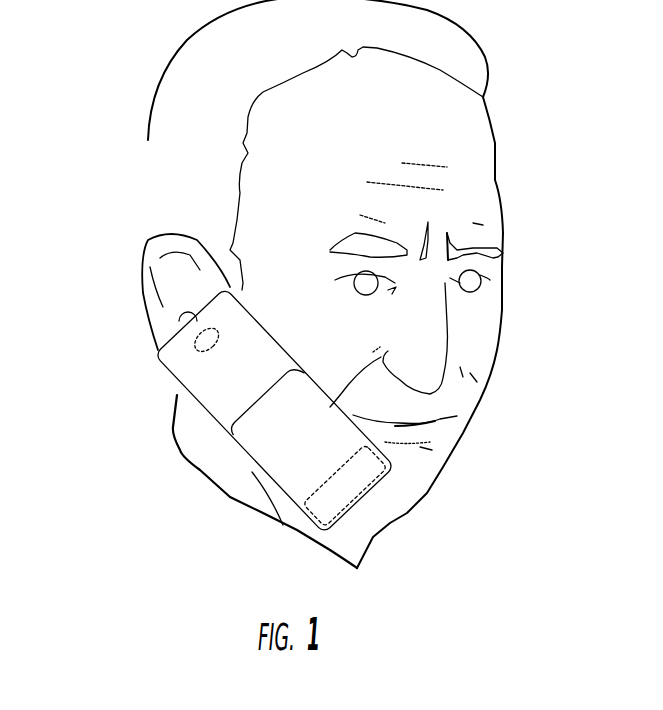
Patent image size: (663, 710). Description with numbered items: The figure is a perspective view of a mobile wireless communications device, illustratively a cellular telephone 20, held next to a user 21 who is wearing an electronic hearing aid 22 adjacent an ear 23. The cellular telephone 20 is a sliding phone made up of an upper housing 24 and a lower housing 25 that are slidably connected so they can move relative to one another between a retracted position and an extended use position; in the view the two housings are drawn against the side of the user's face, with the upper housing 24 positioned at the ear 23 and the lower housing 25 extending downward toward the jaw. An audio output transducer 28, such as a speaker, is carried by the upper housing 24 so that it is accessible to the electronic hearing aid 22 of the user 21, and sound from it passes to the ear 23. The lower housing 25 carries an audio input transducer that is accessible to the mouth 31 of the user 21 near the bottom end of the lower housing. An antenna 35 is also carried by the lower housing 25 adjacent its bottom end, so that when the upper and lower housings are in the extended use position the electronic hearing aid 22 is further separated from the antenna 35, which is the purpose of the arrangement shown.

The cellular telephone 20 is at (214, 405).
The user 21 is at (497, 143).
The electronic hearing aid 22 is at (187, 315).
The ear 23 is at (155, 243).
The upper housing 24 is at (157, 353).
The lower housing 25 is at (257, 458).
The audio output transducer 28 is at (190, 338).
The mouth 31 is at (418, 427).
The antenna 35 is at (300, 525).